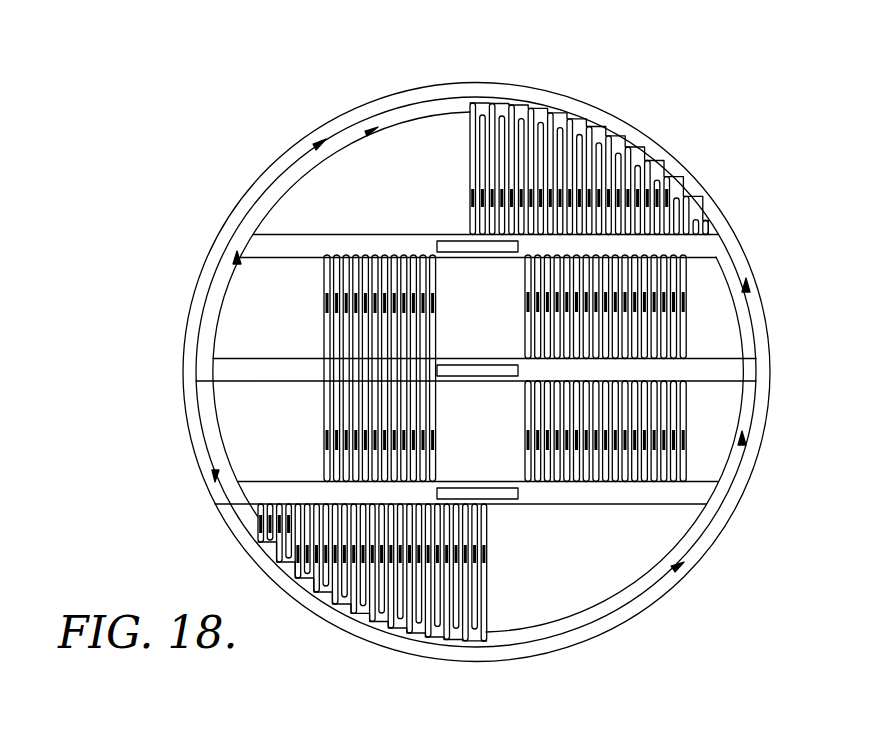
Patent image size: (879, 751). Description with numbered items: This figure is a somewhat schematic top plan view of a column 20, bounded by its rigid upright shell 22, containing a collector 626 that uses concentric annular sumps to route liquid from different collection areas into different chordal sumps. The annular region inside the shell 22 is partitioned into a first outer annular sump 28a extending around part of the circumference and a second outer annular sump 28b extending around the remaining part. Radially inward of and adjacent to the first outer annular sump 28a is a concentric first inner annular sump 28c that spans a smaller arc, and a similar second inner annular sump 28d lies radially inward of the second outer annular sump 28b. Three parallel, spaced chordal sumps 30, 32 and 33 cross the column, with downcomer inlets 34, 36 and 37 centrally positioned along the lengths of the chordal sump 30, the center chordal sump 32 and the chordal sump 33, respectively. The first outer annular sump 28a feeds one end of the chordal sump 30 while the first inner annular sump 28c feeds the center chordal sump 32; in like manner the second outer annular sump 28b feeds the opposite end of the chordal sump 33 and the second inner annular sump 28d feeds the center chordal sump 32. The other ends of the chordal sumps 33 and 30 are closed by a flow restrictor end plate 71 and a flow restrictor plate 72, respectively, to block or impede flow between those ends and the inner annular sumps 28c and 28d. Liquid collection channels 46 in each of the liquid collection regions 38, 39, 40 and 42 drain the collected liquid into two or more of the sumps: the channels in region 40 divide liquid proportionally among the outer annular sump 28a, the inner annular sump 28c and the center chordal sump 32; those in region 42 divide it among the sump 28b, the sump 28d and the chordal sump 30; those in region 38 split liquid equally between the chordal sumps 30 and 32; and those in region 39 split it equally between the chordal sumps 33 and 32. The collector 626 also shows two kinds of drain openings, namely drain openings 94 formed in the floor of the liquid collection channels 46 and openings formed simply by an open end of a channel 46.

The column 20 is at (688, 156).
The shell 22 is at (708, 194).
The first outer annular sump 28a is at (350, 120).
The second outer annular sump 28b is at (523, 648).
The first inner annular sump 28c is at (473, 104).
The second inner annular sump 28d is at (574, 626).
The chordal sump 30 is at (613, 508).
The center chordal sump 32 is at (707, 383).
The chordal sump 33 is at (692, 259).
The downcomer inlet 34 is at (480, 492).
The downcomer inlet 36 is at (480, 367).
The downcomer inlet 37 is at (480, 249).
The liquid collection region 38 is at (712, 466).
The liquid collection region 39 is at (728, 272).
The liquid collection region 40 is at (434, 140).
The liquid collection region 42 is at (614, 584).
The liquid collection channels 46 is at (470, 178).
The flow restrictor end plate 71 is at (243, 256).
The flow restrictor plate 72 is at (691, 506).
The drain openings 94 is at (350, 366).
The collector 626 is at (638, 133).